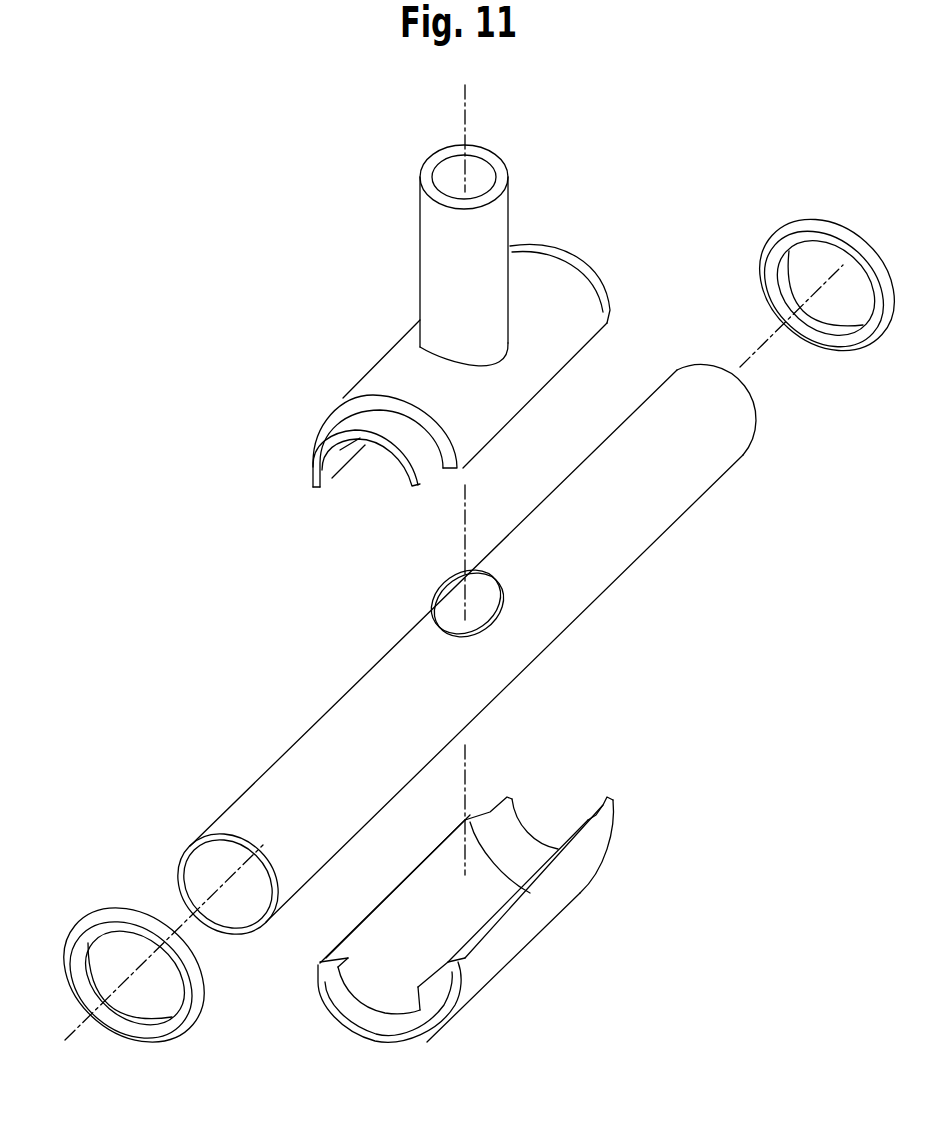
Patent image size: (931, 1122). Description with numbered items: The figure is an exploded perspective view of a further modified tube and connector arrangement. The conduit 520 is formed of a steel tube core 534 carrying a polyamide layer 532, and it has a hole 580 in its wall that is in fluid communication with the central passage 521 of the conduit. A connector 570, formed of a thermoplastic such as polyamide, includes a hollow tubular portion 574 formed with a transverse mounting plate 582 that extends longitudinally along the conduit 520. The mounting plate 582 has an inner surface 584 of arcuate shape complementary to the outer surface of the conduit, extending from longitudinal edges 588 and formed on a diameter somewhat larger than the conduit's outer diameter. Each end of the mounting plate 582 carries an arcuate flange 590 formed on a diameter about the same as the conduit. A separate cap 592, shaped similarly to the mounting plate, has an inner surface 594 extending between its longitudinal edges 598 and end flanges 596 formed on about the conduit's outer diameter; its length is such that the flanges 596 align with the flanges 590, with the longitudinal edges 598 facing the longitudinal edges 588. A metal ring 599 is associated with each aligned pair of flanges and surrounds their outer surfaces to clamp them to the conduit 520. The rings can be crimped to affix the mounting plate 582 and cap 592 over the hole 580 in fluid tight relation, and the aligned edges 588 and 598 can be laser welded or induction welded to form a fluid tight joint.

The conduit 520 is at (434, 659).
The central passage 521 is at (198, 882).
The polyamide layer 532 is at (183, 856).
The steel tube core 534 is at (625, 560).
The connector 570 is at (476, 255).
The hollow tubular portion 574 is at (500, 218).
The hole 580 is at (492, 613).
The mounting plate 582 is at (469, 401).
The inner surface 584 is at (362, 445).
The longitudinal edges 588 is at (580, 356).
The arcuate flange 590 is at (585, 262).
The cap 592 is at (527, 923).
The inner surface 594 is at (412, 902).
The end flanges 596 is at (612, 808).
The longitudinal edges 598 is at (443, 847).
The metal ring 599 is at (880, 328).